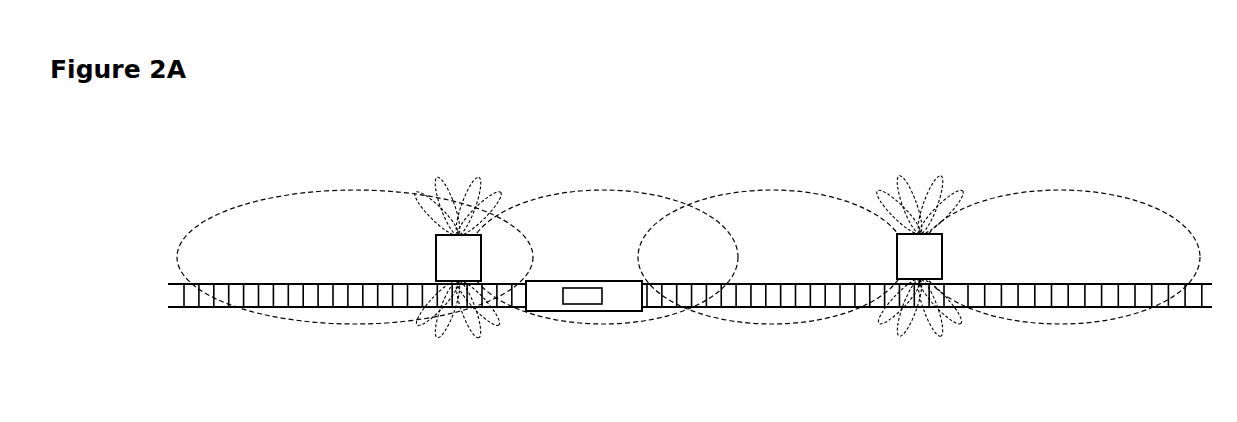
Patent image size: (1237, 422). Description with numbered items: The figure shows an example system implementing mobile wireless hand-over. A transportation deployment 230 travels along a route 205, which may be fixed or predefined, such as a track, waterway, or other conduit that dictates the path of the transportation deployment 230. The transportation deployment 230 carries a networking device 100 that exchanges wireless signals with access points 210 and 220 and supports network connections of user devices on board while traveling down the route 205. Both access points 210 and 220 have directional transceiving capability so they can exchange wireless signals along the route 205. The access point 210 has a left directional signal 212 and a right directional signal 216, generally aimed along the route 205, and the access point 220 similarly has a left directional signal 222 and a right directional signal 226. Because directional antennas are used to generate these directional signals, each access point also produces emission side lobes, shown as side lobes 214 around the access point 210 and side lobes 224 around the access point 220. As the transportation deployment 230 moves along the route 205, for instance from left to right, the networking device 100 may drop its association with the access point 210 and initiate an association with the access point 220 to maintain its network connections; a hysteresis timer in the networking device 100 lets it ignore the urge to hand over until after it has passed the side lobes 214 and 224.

The networking device 100 is at (543, 338).
The route 205 is at (185, 308).
The access point 210 is at (380, 347).
The left directional signal 212 is at (332, 192).
The side lobes 214 is at (507, 180).
The right directional signal 216 is at (608, 190).
The access point 220 is at (995, 350).
The left directional signal 222 is at (783, 190).
The side lobes 224 is at (971, 180).
The right directional signal 226 is at (1073, 190).
The transportation deployment 230 is at (670, 362).